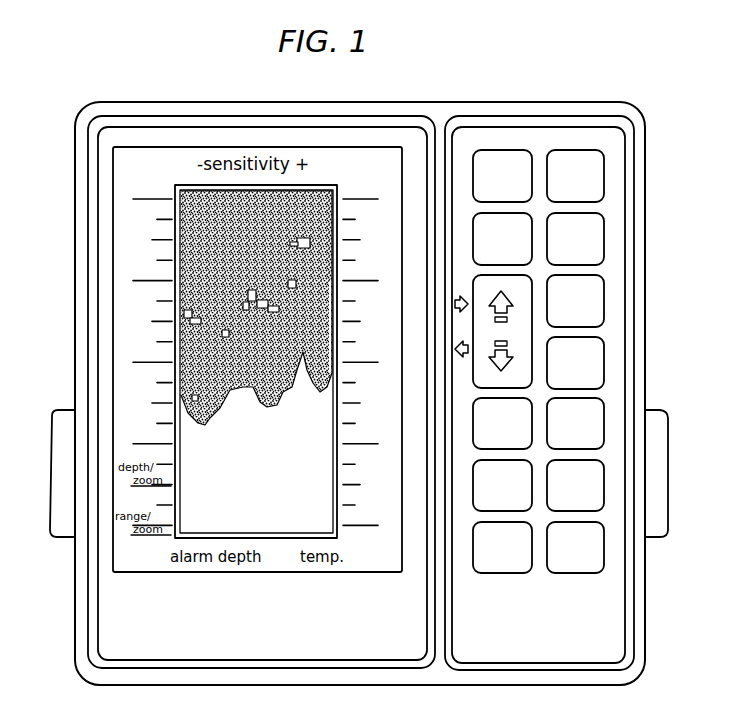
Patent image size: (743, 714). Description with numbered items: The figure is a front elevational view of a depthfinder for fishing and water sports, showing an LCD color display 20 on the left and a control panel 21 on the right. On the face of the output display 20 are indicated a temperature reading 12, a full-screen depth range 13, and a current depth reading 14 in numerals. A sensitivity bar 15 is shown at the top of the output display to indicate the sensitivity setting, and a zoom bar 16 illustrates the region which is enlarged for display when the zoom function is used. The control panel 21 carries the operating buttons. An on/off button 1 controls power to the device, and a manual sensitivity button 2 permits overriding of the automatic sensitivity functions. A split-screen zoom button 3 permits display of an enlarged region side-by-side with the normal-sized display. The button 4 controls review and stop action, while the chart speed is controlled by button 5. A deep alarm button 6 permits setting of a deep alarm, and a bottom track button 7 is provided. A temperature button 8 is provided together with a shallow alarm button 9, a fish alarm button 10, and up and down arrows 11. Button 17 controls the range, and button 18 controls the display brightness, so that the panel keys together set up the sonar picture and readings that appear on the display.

The on/off button 1 is at (603, 161).
The manual sensitivity button 2 is at (605, 243).
The split-screen zoom button 3 is at (605, 297).
The review button 4 is at (605, 352).
The chart speed button 5 is at (605, 411).
The deep alarm button 6 is at (605, 493).
The bottom track button 7 is at (605, 567).
The temperature button 8 is at (487, 575).
The shallow alarm button 9 is at (473, 497).
The fish alarm button 10 is at (473, 437).
The up and down arrows 11 is at (473, 329).
The temperature reading 12 is at (292, 510).
The range readout 13 is at (216, 516).
The current depth reading 14 is at (212, 480).
The sensitivity bar 15 is at (213, 190).
The zoom bar 16 is at (330, 312).
The range button 17 is at (473, 229).
The display brightness button 18 is at (491, 160).
The LCD color display 20 is at (165, 272).
The control panel 21 is at (544, 132).